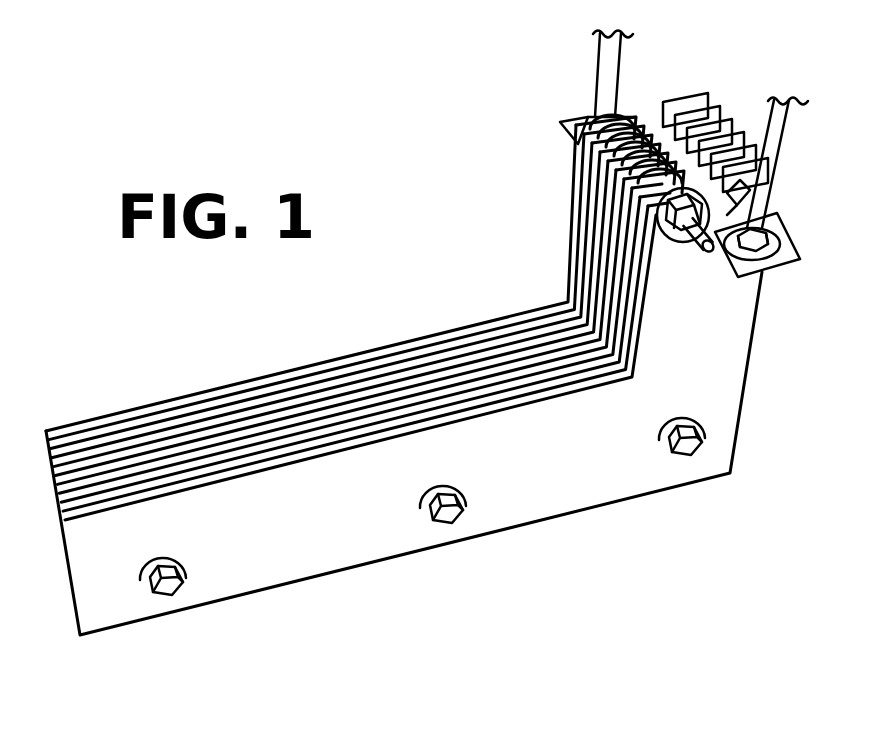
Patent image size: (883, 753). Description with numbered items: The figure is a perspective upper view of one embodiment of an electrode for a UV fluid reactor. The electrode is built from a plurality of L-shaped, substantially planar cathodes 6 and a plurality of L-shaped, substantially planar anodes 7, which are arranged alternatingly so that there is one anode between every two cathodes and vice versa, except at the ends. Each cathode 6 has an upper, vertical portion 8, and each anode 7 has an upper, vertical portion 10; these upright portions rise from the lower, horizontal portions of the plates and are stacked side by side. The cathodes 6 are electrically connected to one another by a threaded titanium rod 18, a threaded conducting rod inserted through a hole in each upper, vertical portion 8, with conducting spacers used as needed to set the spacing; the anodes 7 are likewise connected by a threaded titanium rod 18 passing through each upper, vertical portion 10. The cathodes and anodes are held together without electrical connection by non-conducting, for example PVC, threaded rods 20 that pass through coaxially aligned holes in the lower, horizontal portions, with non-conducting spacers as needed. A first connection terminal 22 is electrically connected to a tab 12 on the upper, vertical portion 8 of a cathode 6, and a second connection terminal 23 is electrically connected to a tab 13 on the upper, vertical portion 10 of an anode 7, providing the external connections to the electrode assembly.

The cathode 6 is at (122, 408).
The anode 7 is at (533, 502).
The upper, vertical portion 8 is at (700, 92).
The upper, vertical portion 10 is at (628, 118).
The tab 12 is at (562, 130).
The tab 13 is at (785, 262).
The threaded titanium rod 18 is at (672, 248).
The non-conducting threaded rod 20 is at (450, 517).
The first connection terminal 22 is at (603, 82).
The second connection terminal 23 is at (779, 152).